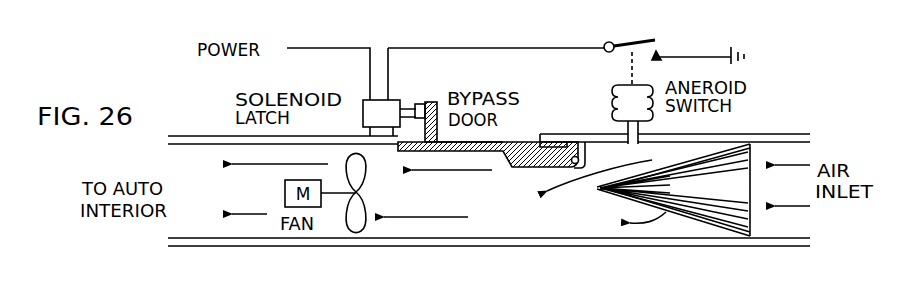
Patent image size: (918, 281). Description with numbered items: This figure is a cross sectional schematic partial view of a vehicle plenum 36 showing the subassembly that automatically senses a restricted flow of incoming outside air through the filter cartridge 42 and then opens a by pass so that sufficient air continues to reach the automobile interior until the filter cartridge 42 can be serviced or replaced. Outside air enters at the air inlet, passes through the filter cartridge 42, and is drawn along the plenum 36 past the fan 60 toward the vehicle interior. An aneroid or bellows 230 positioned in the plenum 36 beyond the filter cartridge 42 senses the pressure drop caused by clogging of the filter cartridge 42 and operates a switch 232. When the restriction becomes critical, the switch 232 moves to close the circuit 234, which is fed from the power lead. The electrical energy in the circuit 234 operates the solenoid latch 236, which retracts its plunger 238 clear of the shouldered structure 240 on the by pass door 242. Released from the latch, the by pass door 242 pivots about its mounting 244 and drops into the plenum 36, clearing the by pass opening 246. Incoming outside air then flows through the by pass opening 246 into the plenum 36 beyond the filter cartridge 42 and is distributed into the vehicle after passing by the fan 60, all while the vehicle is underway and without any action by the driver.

The plenum 36 is at (523, 240).
The filter cartridge 42 is at (688, 222).
The fan 60 is at (350, 234).
The aneroid or bellows 230 is at (612, 87).
The switch 232 is at (632, 42).
The circuit 234 is at (446, 47).
The solenoid latch 236 is at (365, 100).
The plunger 238 is at (409, 104).
The shouldered structure 240 is at (426, 102).
The by pass door 242 is at (492, 168).
The mounting 244 is at (581, 166).
The by pass opening 246 is at (541, 137).